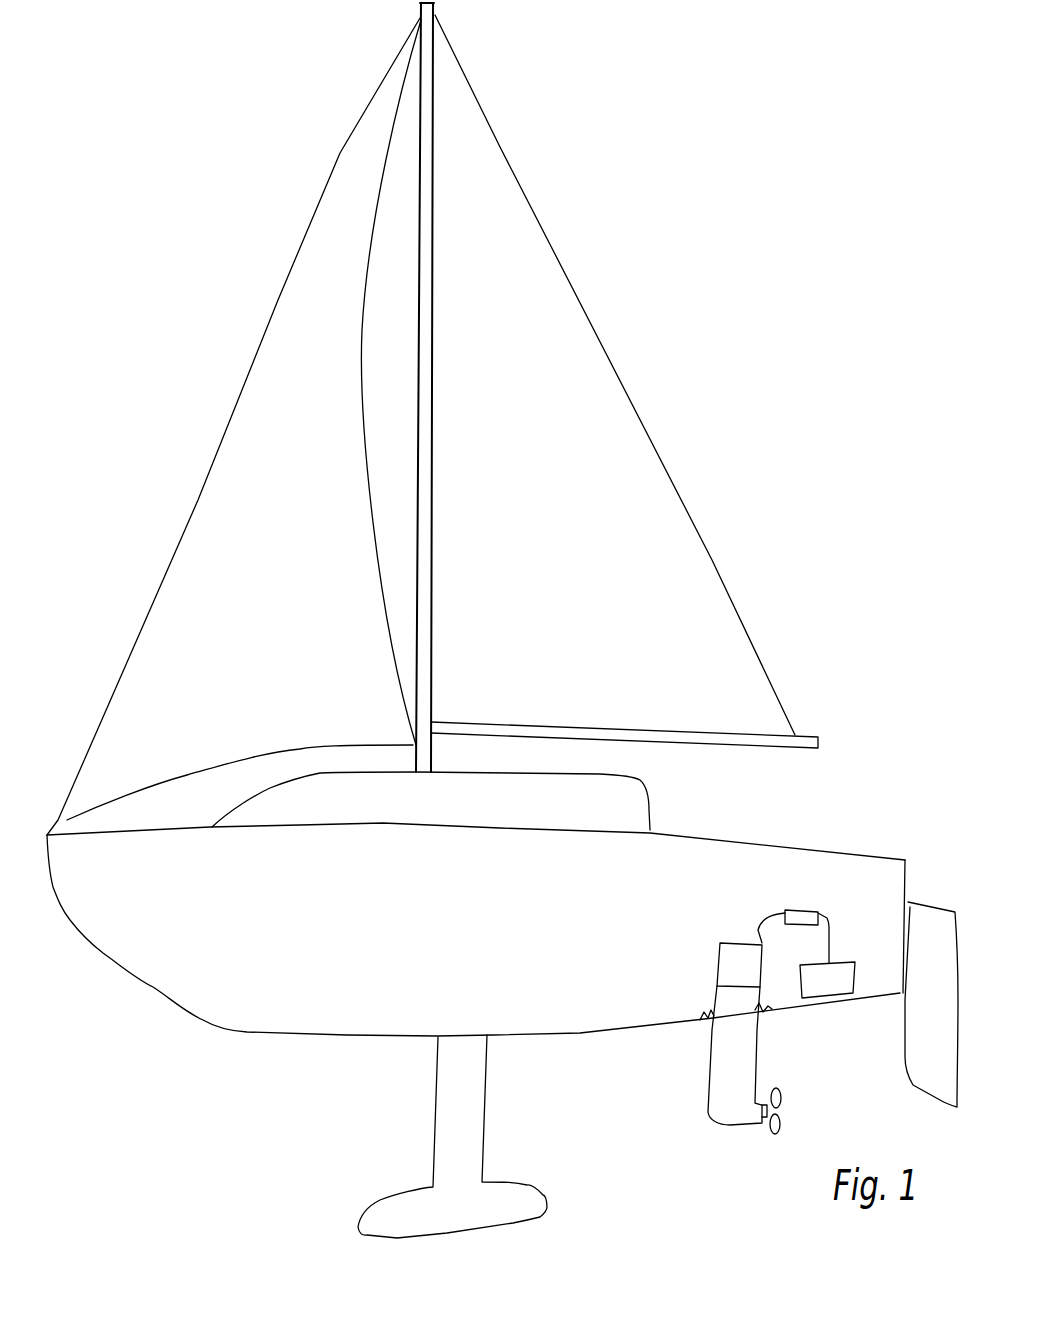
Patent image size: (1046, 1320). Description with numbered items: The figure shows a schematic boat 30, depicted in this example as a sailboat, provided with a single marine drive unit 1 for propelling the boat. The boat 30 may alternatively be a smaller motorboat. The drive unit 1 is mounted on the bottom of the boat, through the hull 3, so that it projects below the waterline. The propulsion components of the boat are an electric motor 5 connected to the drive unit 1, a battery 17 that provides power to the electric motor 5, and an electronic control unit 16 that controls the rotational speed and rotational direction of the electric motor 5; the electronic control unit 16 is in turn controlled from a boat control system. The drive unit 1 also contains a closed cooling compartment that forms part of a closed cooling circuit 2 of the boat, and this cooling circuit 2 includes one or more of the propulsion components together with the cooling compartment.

The boat 30 is at (798, 645).
The hull 3 is at (255, 1013).
The closed cooling circuit 2 is at (709, 1038).
The electric motor 5 is at (727, 955).
The marine drive unit 1 is at (720, 1057).
The electronic control unit 16 is at (800, 918).
The battery 17 is at (833, 977).